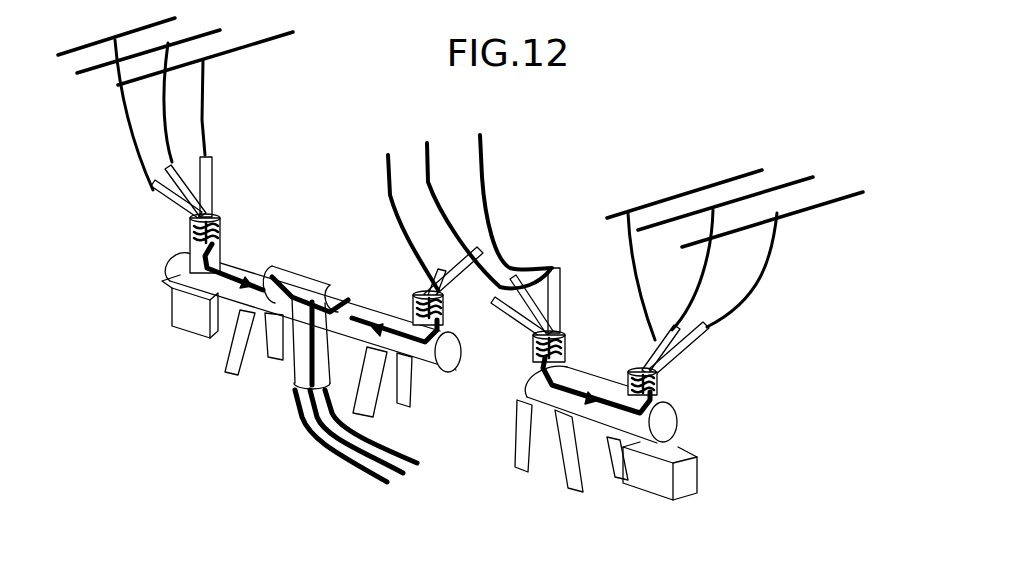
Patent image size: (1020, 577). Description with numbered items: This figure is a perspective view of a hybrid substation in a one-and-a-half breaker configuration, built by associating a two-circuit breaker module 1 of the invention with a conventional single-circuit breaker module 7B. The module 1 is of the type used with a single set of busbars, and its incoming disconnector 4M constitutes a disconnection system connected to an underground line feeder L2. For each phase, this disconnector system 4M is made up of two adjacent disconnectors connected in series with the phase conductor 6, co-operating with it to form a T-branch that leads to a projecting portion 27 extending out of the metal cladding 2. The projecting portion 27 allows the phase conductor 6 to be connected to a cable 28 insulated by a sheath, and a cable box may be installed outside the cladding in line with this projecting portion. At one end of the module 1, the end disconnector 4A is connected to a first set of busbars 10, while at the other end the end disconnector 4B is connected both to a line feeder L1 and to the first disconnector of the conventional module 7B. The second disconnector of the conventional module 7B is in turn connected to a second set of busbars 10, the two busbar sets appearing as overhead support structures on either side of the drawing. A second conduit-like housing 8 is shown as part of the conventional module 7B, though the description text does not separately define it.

The two-circuit breaker module 1 is at (258, 322).
The metal cladding 2 is at (365, 305).
The end disconnector 4A is at (202, 252).
The end disconnector 4B is at (447, 327).
The incoming disconnector 4M is at (325, 290).
The phase conductor 6 is at (170, 283).
The conventional single-circuit breaker module 7B is at (575, 428).
The second conduit 8 is at (597, 366).
The set of busbars 10 is at (36, 52).
The projecting portion 27 is at (288, 367).
The cable 28 is at (440, 463).
The line feeder L1 is at (470, 206).
The underground line feeder L2 is at (355, 442).